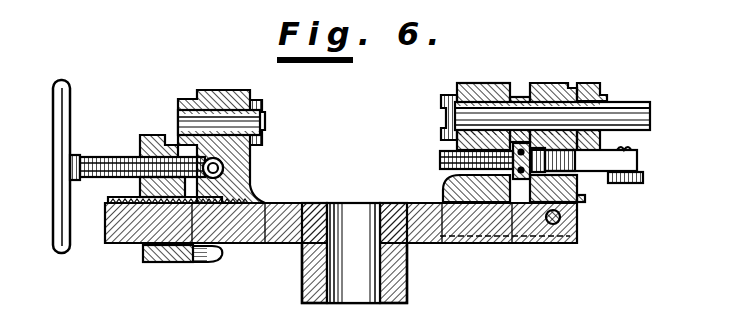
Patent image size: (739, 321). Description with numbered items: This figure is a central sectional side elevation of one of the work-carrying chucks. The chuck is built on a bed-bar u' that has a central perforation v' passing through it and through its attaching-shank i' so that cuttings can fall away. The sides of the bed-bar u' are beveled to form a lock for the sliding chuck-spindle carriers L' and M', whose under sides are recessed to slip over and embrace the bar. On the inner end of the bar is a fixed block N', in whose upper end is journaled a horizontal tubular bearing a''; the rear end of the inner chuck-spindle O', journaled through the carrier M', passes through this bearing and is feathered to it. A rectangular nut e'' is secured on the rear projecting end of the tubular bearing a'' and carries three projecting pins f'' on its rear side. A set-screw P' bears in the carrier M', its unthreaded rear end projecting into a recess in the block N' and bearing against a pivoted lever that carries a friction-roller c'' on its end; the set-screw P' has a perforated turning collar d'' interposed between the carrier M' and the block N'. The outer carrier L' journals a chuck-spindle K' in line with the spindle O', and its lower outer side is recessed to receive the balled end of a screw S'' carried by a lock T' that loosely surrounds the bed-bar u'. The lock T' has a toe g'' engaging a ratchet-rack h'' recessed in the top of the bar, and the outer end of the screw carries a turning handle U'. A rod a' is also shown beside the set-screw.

The turning handle U' is at (75, 166).
The feed screw S'' is at (146, 156).
The lock T' is at (162, 153).
The outer carrier L' is at (221, 132).
The shaft K' is at (238, 121).
The toe g'' is at (175, 188).
The ratchet-rack h'' is at (161, 264).
The bed-bar u' is at (341, 241).
The central perforation v' is at (353, 253).
The attaching-shank i' is at (367, 253).
The perforated turning collar d'' is at (520, 208).
The set-screw P' is at (455, 162).
The inner carrier M' is at (485, 99).
The inner chuck-spindle O' is at (523, 79).
The fixed block N' is at (555, 98).
The rectangular nut e'' is at (597, 99).
The projecting pins f'' is at (621, 69).
The tubular bearing a'' is at (558, 98).
The rod a' is at (591, 175).
The friction-roller c'' is at (639, 190).